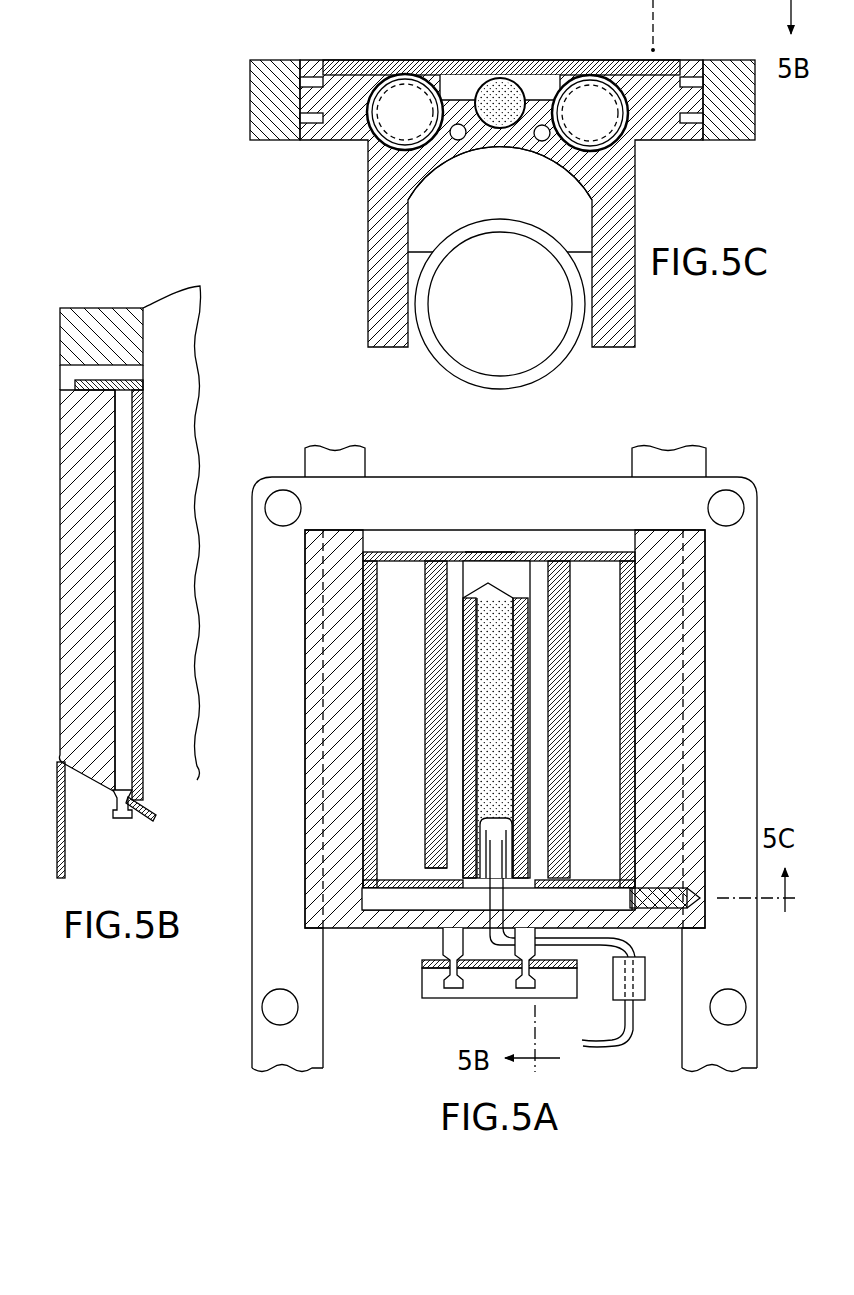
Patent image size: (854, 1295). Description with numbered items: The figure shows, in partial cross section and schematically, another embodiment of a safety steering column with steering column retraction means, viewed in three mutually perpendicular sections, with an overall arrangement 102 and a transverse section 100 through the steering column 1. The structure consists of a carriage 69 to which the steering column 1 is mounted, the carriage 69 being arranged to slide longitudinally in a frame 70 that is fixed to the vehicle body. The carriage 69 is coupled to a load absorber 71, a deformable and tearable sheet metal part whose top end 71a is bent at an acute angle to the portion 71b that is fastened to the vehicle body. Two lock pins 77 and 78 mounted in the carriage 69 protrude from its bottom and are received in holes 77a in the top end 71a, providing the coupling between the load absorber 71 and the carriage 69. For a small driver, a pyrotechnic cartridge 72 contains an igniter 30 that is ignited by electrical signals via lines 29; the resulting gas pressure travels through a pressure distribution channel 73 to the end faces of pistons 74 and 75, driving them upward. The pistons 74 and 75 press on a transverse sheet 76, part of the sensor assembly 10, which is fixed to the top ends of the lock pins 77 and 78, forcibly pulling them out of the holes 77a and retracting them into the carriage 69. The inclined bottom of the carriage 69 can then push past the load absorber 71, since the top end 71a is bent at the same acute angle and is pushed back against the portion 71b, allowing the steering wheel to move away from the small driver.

In FIG. 5C, the steering column 1 is at (470, 228).
In FIG. 5A, the sensor assembly 10 is at (485, 552).
In FIG. 5A, the lines 29 is at (583, 1043).
In FIG. 5A, the igniter 30 is at (505, 824).
In FIG. 5C, the carriage 69 is at (332, 125).
In FIG. 5B, the carriage 69 is at (70, 538).
In FIG. 5A, the carriage 69 is at (662, 640).
In FIG. 5C, the frame 70 is at (258, 75).
In FIG. 5B, the frame 70 is at (70, 341).
In FIG. 5A, the frame 70 is at (318, 495).
In FIG. 5B, the load absorber 71 is at (68, 867).
In FIG. 5A, the load absorber 71 is at (430, 980).
In FIG. 5B, the top end 71a is at (158, 818).
In FIG. 5B, the portion 71b is at (58, 828).
In FIG. 5C, the pyrotechnic cartridge 72 is at (495, 85).
In FIG. 5A, the pyrotechnic cartridge 72 is at (495, 660).
In FIG. 5A, the pressure distribution channel 73 is at (390, 898).
In FIG. 5C, the piston 74 is at (414, 128).
In FIG. 5A, the piston 74 is at (385, 740).
In FIG. 5C, the piston 75 is at (612, 130).
In FIG. 5A, the piston 75 is at (605, 740).
In FIG. 5B, the transverse sheet 76 is at (85, 386).
In FIG. 5A, the transverse sheet 76 is at (500, 552).
In FIG. 5C, the lock pin 77 is at (460, 142).
In FIG. 5A, the lock pin 77 is at (452, 990).
In FIG. 5B, the holes 77a is at (133, 800).
In FIG. 5C, the lock pin 78 is at (544, 143).
In FIG. 5B, the lock pin 78 is at (125, 822).
In FIG. 5A, the lock pin 78 is at (528, 990).
In FIG. 5C, the sensor housing 100 is at (350, 272).
In FIG. 5A, the sensor module 102 is at (745, 445).